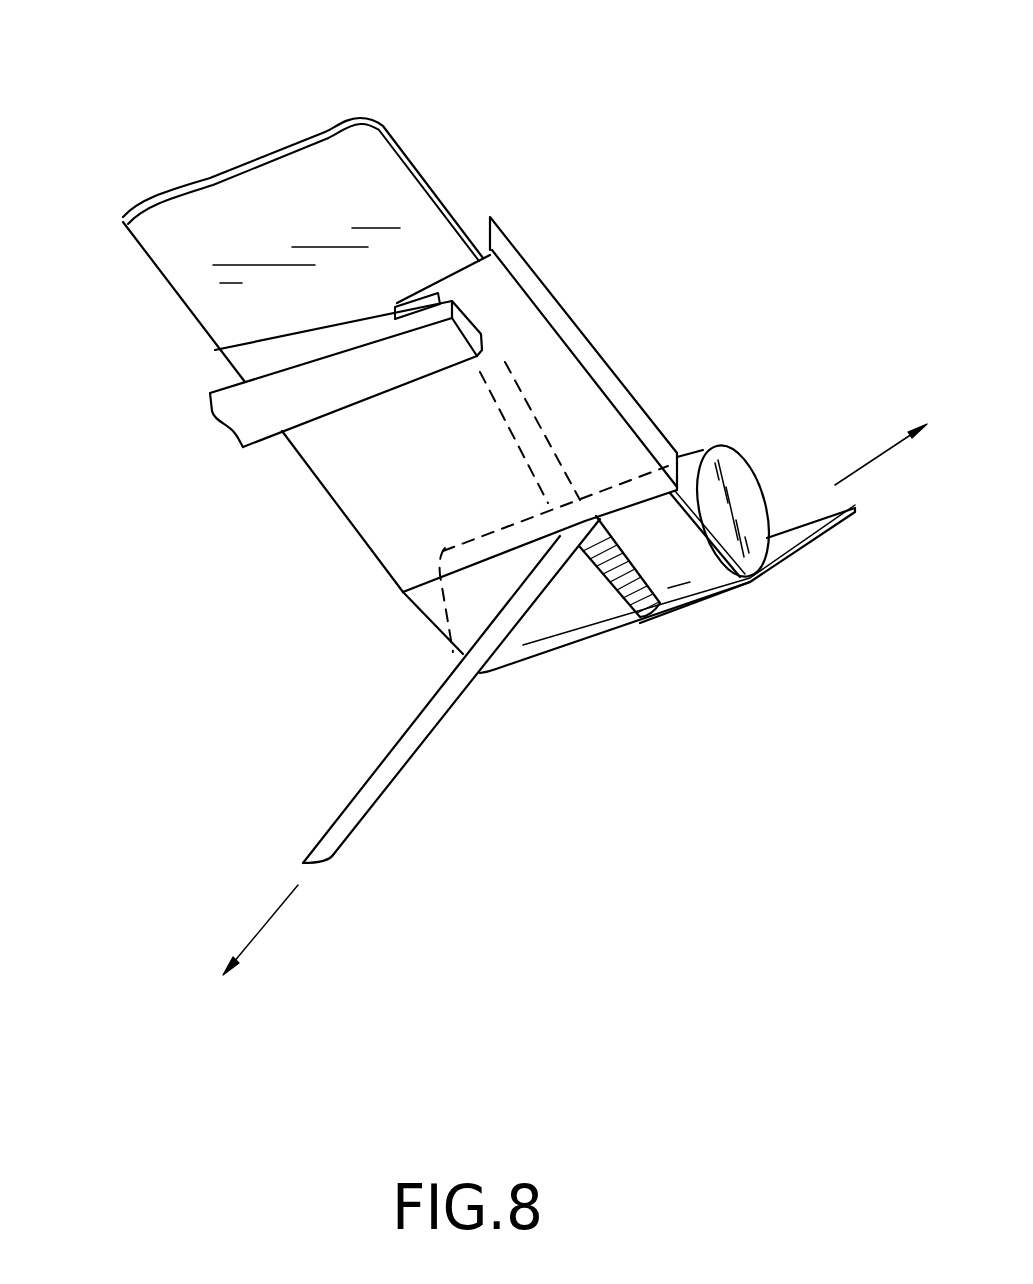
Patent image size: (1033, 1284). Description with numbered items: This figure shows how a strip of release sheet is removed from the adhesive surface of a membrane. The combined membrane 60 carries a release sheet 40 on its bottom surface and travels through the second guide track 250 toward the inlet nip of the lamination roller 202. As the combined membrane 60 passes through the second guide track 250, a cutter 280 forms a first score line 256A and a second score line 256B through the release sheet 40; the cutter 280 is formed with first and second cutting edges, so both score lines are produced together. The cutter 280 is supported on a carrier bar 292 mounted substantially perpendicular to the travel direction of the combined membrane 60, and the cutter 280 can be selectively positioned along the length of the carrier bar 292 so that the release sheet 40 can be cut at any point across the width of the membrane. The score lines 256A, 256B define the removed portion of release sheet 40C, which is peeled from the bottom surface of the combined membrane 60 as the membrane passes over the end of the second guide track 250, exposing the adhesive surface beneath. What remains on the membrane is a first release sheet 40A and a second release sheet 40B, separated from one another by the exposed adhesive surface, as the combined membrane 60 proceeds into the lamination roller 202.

The combined membrane 60 is at (462, 176).
The release sheet 40 is at (300, 228).
The carrier bar 292 is at (245, 362).
The cutter 280 is at (437, 298).
The second guide track 250 is at (637, 417).
The first score line 256A is at (505, 397).
The second score line 256B is at (482, 422).
The lamination roller 202 is at (747, 483).
The first release sheet 40A is at (560, 617).
The second release sheet 40B is at (713, 580).
The removed portion of release sheet 40C is at (393, 765).